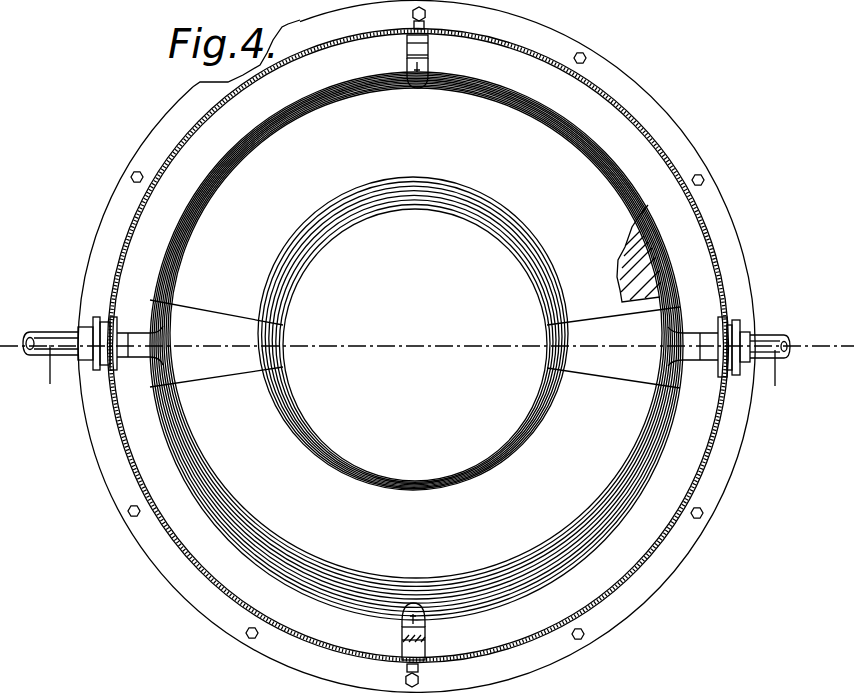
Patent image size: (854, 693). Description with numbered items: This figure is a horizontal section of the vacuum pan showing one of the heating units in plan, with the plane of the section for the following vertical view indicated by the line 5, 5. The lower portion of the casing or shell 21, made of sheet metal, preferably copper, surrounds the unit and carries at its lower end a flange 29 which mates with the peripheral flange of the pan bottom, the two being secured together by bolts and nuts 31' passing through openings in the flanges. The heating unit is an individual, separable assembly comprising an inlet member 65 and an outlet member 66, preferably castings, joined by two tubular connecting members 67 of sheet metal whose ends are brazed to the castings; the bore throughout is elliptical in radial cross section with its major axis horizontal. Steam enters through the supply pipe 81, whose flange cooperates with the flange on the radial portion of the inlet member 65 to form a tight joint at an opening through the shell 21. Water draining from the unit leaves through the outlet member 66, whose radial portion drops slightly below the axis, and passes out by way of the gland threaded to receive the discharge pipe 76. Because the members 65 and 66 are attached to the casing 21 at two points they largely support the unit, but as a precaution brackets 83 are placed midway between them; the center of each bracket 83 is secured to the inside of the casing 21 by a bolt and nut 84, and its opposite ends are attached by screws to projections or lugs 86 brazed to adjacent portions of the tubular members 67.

The section line 5- 5 is at (419, 366).
The lower portion of the casing or shell 21 is at (705, 481).
The flange 29 is at (645, 583).
The bolts and nuts 31' is at (442, 351).
The inlet member 65 is at (570, 352).
The outlet member 66 is at (382, 373).
The tubular connecting members 67 is at (333, 238).
The discharge pipe 76 is at (68, 322).
The supply pipe 81 is at (32, 331).
The brackets 83 is at (429, 50).
The bolt and nut 84 is at (426, 21).
The projections or lugs 86 is at (410, 68).